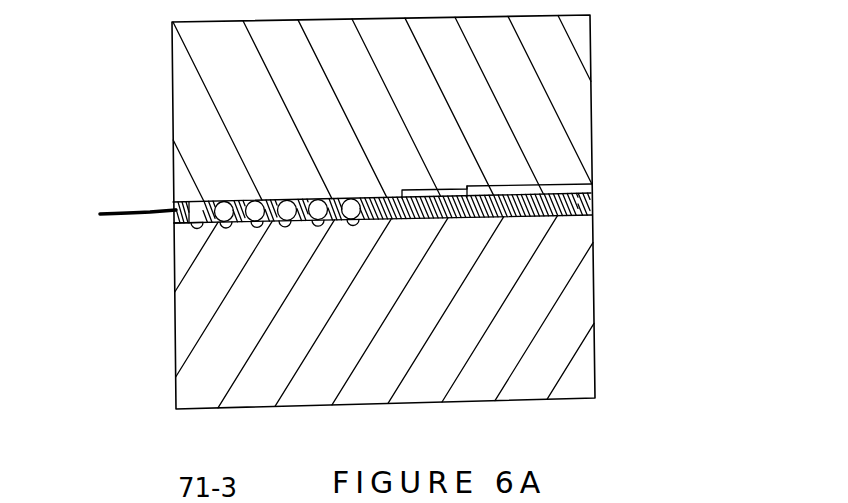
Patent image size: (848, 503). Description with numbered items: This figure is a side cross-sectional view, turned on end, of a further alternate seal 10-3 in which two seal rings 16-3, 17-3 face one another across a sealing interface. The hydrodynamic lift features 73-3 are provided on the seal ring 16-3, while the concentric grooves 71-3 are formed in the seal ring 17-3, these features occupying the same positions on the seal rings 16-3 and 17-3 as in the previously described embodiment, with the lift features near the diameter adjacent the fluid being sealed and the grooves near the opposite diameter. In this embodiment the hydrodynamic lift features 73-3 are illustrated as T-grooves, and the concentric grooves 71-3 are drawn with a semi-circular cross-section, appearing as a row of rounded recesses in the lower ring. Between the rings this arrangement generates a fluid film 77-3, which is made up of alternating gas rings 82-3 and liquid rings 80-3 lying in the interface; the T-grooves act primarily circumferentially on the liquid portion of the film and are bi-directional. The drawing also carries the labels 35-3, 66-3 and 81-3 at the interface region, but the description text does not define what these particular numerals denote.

The seal 10-3 is at (96, 115).
The seal ring 16-3 is at (158, 163).
The seal ring 17-3 is at (160, 350).
The interface layer 35-3 is at (523, 220).
The conductive strip 66-3 is at (502, 195).
The concentric grooves 71-3 is at (187, 231).
The hydrodynamic lift features 73-3 is at (560, 182).
The fluid film 77-3 is at (588, 200).
The liquid rings 80-3 is at (175, 202).
The lead 81-3 is at (113, 217).
The gas rings 82-3 is at (175, 223).